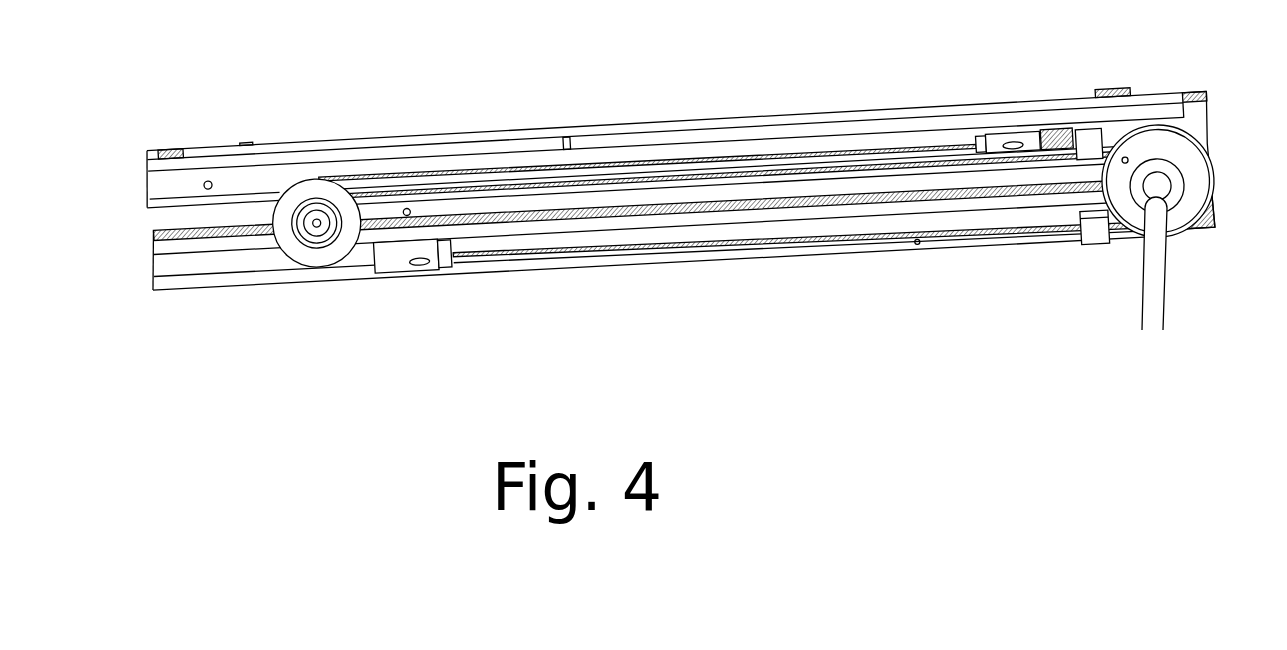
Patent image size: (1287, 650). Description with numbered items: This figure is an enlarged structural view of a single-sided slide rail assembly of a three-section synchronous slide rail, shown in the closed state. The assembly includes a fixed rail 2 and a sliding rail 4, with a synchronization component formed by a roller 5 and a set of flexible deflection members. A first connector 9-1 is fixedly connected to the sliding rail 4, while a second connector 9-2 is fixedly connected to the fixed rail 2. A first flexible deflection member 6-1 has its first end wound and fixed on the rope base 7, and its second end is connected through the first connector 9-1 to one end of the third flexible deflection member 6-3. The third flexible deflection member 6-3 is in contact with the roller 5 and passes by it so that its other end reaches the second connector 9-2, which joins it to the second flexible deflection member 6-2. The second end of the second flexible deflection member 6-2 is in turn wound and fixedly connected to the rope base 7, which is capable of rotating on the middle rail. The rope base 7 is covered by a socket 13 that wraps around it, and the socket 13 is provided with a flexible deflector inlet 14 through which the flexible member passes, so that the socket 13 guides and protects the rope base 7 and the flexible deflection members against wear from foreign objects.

The fixed rail 2 is at (173, 270).
The sliding rail 4 is at (164, 180).
The roller 5 is at (308, 260).
The first flexible deflection member 6-1 is at (1054, 133).
The second flexible deflection member 6-2 is at (590, 250).
The third flexible deflection member 6-3 is at (517, 167).
The rope base 7 is at (1160, 165).
The first connector 9-1 is at (1002, 133).
The second connector 9-2 is at (420, 265).
The socket 13 is at (1206, 148).
The flexible deflector inlet 14 is at (1090, 147).